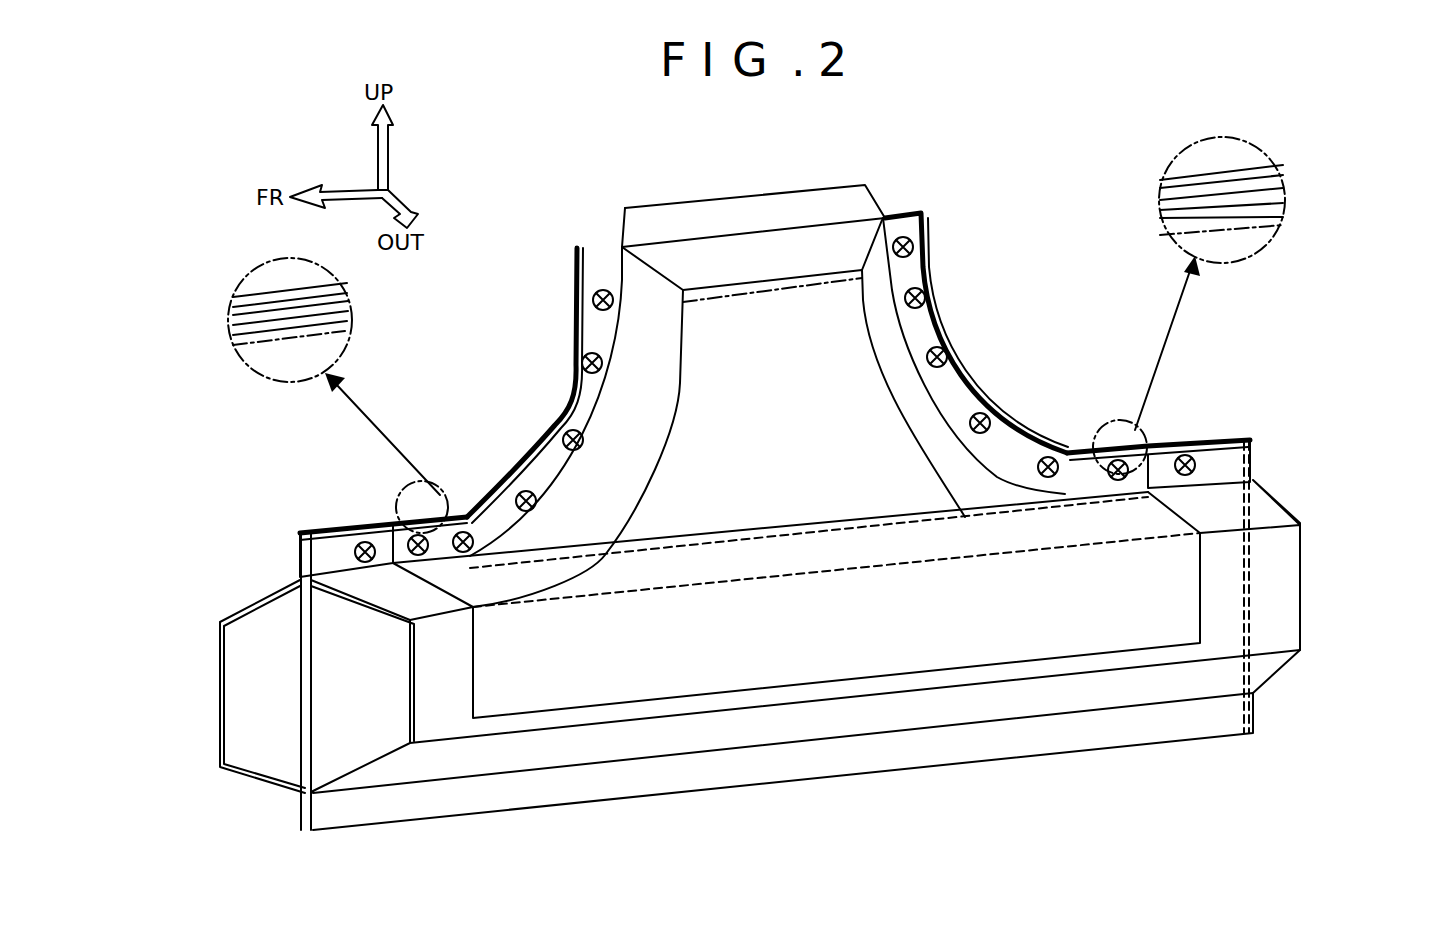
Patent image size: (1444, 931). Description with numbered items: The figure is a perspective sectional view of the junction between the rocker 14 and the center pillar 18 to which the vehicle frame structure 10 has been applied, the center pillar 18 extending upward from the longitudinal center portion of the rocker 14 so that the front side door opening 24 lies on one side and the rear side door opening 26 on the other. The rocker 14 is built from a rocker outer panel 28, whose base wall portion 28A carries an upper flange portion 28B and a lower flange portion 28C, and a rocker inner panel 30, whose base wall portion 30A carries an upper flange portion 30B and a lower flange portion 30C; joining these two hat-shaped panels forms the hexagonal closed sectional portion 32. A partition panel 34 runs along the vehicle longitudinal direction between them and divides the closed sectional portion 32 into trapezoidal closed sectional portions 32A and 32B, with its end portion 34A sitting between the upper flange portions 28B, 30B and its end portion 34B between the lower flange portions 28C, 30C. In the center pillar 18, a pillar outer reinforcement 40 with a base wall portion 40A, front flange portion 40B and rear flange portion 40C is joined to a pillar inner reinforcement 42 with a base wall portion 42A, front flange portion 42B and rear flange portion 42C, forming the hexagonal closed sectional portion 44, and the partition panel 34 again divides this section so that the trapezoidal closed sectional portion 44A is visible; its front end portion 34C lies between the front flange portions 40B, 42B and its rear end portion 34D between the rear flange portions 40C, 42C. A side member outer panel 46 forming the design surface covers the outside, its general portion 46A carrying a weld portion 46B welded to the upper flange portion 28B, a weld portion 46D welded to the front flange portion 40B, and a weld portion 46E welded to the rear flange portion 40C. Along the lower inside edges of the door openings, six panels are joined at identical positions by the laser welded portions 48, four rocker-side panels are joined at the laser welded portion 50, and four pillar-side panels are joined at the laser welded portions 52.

The vehicle frame structure 10 is at (1083, 292).
The rocker 14 is at (246, 803).
The center pillar 18 is at (735, 187).
The front side door opening 24 is at (430, 377).
The rear side door opening 26 is at (1132, 346).
The rocker outer panel 28 is at (393, 824).
The base wall portion 28A is at (433, 770).
The upper flange portion 28B is at (317, 528).
The lower flange portion 28C is at (340, 820).
The rocker inner panel 30 is at (220, 735).
The base wall portion 30A is at (218, 697).
The upper flange portion 30B is at (297, 562).
The lower flange portion 30C is at (300, 813).
The closed sectional portion 32 is at (285, 730).
The closed sectional portion 32A is at (390, 695).
The closed sectional portion 32B is at (285, 695).
The partition panel 34 is at (304, 647).
The end portion 34A is at (297, 550).
The end portion 34B is at (307, 814).
The front end portion 34C is at (575, 247).
The rear end portion 34D is at (935, 230).
The pillar outer reinforcement 40 is at (970, 672).
The base wall portion 40A is at (890, 298).
The front flange portion 40B is at (580, 318).
The rear flange portion 40C is at (923, 317).
The pillar inner reinforcement 42 is at (700, 200).
The base wall portion 42A is at (650, 207).
The front flange portion 42B is at (595, 246).
The rear flange portion 42C is at (905, 212).
The closed sectional portion 44 is at (930, 132).
The closed sectional portion 44A is at (840, 352).
The side member outer panel 46 is at (1277, 498).
The general portion 46A is at (1270, 585).
The weld portion 46B is at (335, 520).
The weld portion 46D is at (570, 350).
The weld portion 46E is at (937, 333).
The laser welded portions 48 is at (457, 505).
The laser welded portion 50 is at (367, 533).
The laser welded portions 52 is at (533, 437).